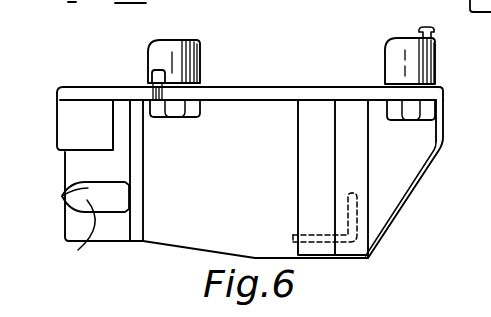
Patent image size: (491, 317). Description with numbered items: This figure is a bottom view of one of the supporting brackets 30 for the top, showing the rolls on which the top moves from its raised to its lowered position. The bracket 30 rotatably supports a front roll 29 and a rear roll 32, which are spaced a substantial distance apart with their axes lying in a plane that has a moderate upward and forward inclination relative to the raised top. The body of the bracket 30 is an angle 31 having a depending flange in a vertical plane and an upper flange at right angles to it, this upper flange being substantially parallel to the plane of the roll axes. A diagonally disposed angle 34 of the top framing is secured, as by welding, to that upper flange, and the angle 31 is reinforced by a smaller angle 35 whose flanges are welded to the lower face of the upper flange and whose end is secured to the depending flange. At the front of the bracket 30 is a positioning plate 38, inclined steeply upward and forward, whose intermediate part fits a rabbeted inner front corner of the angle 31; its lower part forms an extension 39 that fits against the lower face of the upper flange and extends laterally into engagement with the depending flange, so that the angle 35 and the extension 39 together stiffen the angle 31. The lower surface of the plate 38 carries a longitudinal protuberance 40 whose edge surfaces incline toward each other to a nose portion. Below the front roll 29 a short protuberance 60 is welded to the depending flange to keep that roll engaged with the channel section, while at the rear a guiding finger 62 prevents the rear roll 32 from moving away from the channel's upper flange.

The front roll 29 is at (162, 40).
The supporting bracket 30 is at (274, 82).
The angle 31 is at (223, 105).
The rear roll 32 is at (385, 64).
The diagonally disposed angle 34 is at (293, 236).
The smaller angle 35 is at (360, 143).
The positioning plate 38 is at (63, 176).
The extension 39 is at (118, 117).
The longitudinal protuberance 40 is at (78, 250).
The protuberance 60 is at (152, 74).
The guiding finger 62 is at (433, 32).